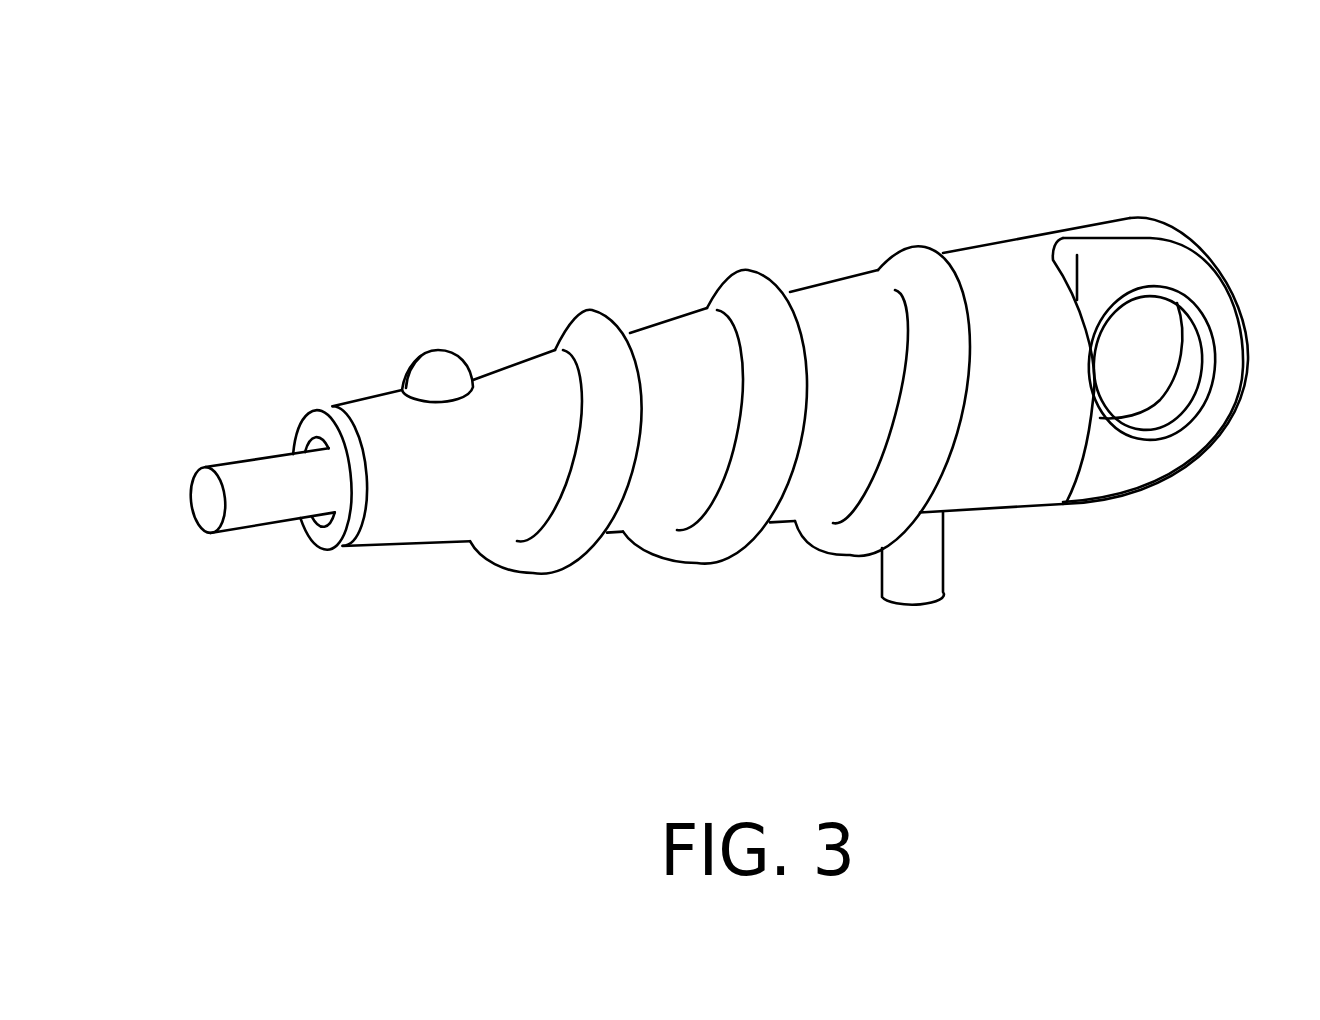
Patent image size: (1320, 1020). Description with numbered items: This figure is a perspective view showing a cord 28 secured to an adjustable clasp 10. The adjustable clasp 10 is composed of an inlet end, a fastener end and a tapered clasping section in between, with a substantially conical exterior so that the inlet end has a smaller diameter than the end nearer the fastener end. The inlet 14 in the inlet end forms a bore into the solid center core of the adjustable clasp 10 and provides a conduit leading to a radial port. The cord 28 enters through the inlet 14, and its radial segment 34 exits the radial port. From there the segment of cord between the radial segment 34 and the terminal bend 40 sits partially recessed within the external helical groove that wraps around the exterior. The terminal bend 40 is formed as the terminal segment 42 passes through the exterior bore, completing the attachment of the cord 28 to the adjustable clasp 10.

The adjustable clasp 10 is at (833, 300).
The inlet 14 is at (322, 447).
The cord 28 is at (763, 303).
The radial segment 34 is at (442, 377).
The terminal bend 40 is at (907, 250).
The terminal segment 42 is at (930, 560).